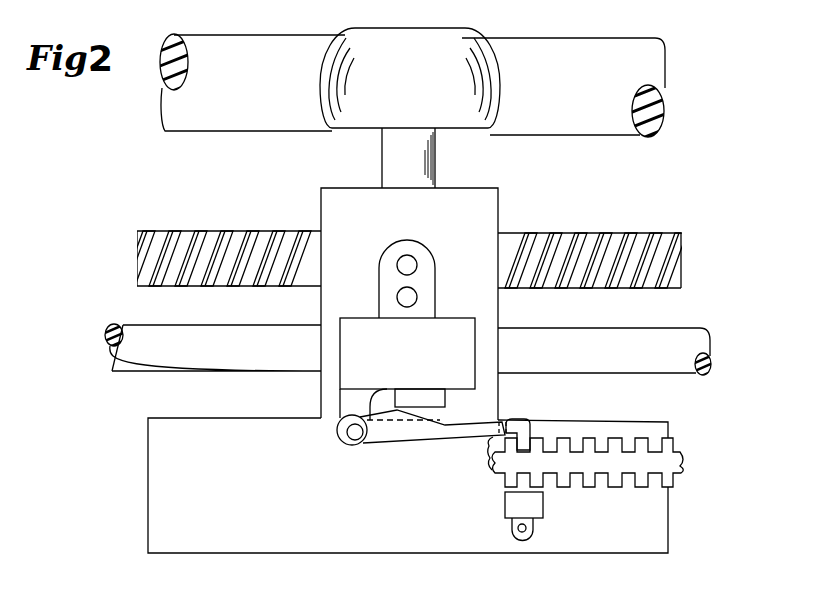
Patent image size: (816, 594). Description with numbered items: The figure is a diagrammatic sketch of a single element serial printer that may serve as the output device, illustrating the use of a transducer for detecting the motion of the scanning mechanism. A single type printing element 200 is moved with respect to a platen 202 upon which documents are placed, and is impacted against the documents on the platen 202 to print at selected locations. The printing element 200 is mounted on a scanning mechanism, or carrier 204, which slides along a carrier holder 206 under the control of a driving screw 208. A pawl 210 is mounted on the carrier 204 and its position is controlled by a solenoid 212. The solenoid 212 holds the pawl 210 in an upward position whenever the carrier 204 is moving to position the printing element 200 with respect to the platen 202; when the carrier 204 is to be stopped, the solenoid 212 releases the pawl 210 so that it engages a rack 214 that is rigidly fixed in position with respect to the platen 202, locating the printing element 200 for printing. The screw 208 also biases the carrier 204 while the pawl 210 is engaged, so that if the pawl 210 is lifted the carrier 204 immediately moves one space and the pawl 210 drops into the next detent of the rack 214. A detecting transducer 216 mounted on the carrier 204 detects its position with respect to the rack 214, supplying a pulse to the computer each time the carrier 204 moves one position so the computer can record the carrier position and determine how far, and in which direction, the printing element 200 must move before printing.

The printing element 200 is at (428, 90).
The platen 202 is at (215, 123).
The carrier 204 is at (427, 226).
The carrier holder 206 is at (182, 360).
The driving screw 208 is at (203, 242).
The pawl 210 is at (522, 418).
The solenoid 212 is at (417, 359).
The rack 214 is at (683, 463).
The detecting transducer 216 is at (540, 508).